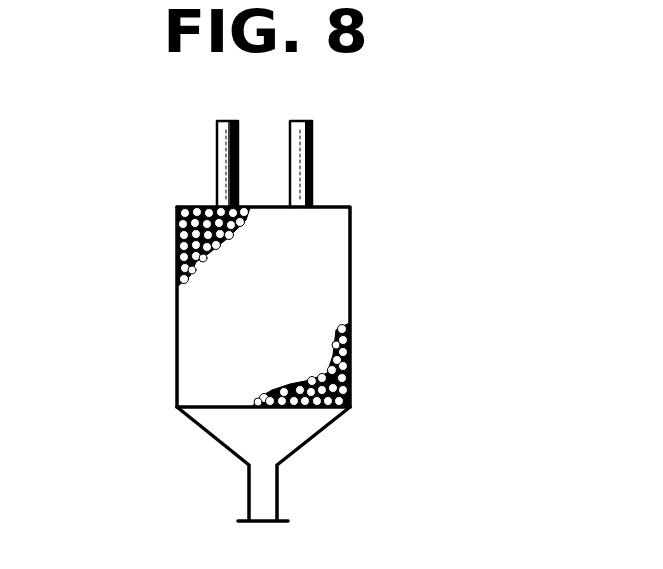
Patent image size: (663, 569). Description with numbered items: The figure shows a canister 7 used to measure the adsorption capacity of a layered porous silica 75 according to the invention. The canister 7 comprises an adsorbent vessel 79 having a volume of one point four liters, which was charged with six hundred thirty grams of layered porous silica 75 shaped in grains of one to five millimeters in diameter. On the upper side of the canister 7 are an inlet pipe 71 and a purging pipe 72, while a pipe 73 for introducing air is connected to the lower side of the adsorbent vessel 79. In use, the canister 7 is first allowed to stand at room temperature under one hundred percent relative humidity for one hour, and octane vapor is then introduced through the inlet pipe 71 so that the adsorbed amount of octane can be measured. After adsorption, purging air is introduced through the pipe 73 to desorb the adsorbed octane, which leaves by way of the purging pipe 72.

The canister 7 is at (355, 264).
The inlet pipe 71 is at (219, 177).
The purging pipe 72 is at (312, 163).
The pipe for introducing air 73 is at (268, 490).
The layered porous silica 75 is at (178, 265).
The adsorbent vessel 79 is at (176, 372).